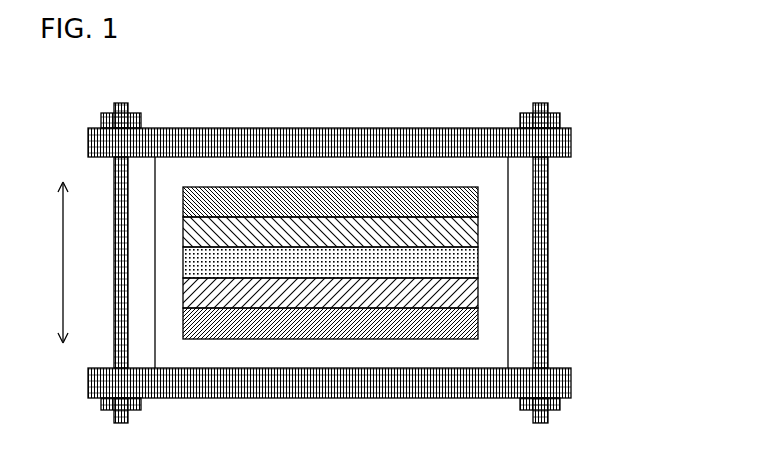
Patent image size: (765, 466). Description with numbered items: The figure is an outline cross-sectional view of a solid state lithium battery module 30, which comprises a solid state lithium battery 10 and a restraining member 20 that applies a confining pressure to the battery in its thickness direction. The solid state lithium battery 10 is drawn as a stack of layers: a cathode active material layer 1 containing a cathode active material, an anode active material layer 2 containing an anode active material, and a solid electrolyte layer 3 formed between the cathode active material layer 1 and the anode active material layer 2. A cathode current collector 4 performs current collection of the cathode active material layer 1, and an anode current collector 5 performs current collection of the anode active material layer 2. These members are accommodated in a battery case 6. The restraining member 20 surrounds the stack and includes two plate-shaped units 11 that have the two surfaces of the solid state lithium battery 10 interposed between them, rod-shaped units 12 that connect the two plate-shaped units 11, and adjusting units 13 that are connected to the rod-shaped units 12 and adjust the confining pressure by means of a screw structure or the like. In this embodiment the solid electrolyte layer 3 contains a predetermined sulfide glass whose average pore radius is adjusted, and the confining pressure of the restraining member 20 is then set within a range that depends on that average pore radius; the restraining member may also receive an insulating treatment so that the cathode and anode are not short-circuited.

The solid state lithium battery module 30 is at (574, 76).
The restraining member 20 is at (644, 103).
The plate-shaped unit 11 is at (555, 143).
The rod-shaped unit 12 is at (543, 168).
The adjusting unit 13 is at (555, 123).
The solid state lithium battery 10 is at (601, 185).
The cathode active material layer 1 is at (470, 232).
The anode active material layer 2 is at (470, 293).
The solid electrolyte layer 3 is at (470, 262).
The cathode current collector 4 is at (470, 202).
The anode current collector 5 is at (470, 323).
The battery case 6 is at (470, 355).